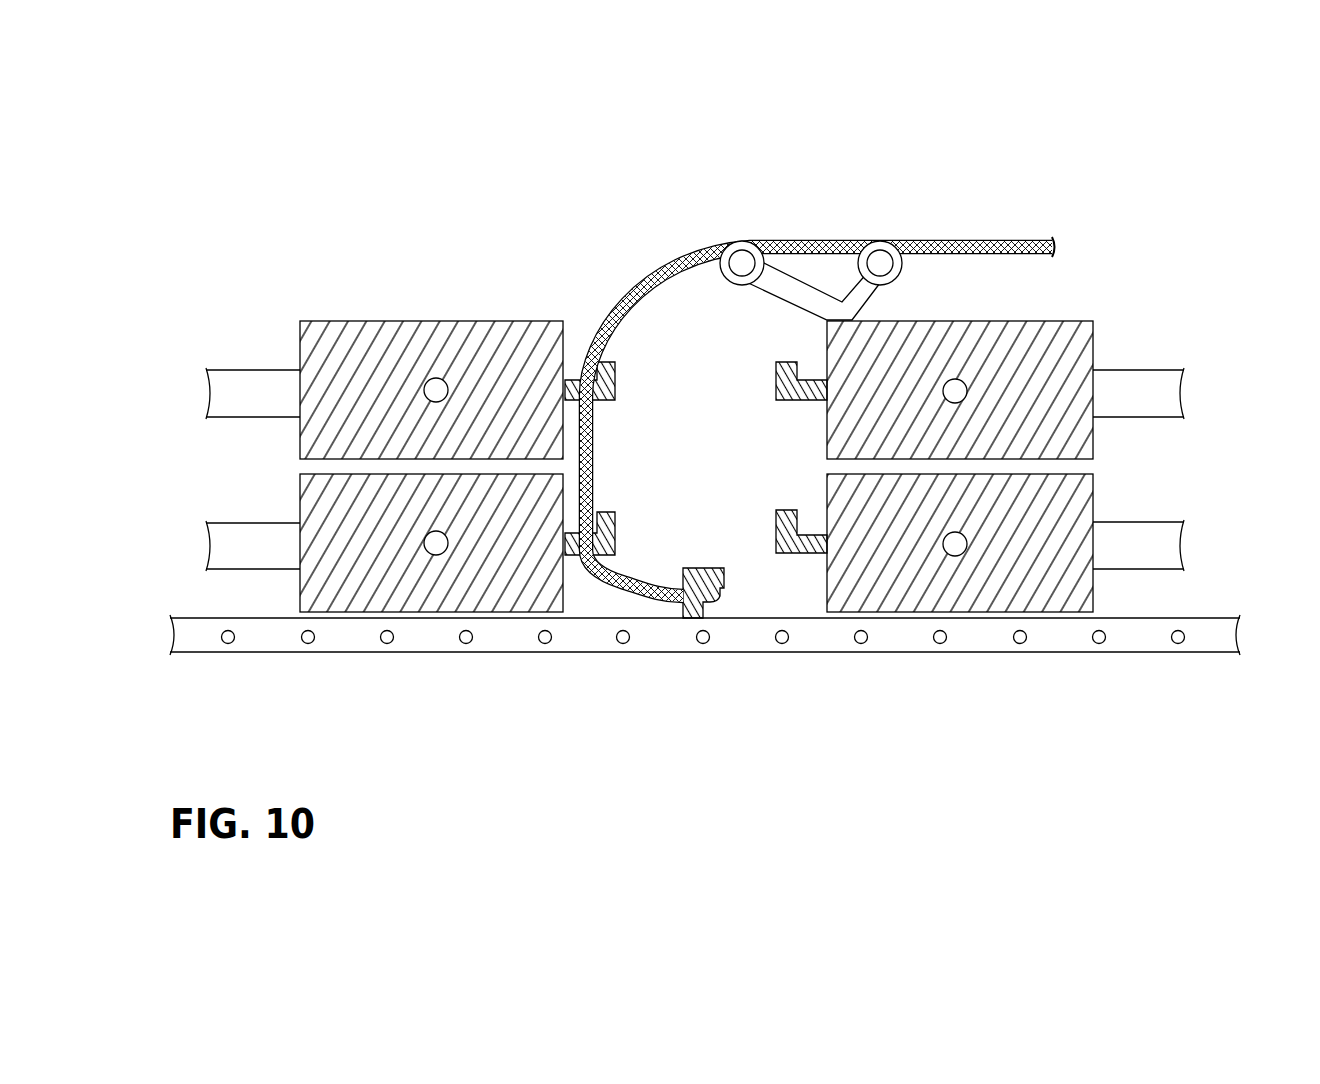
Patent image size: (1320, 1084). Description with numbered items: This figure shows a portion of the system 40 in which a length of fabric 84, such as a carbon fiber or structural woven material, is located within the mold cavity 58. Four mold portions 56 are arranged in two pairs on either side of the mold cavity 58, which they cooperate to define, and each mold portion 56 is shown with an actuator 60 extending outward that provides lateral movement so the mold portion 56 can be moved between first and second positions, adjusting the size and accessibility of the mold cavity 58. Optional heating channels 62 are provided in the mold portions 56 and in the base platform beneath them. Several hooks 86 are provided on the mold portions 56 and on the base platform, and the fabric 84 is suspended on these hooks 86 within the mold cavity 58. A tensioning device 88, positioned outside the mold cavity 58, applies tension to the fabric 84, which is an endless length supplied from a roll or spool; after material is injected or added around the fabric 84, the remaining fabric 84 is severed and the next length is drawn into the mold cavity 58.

The system 40 is at (851, 128).
The mold portions 56 is at (383, 324).
The mold cavity 58 is at (697, 455).
The actuator 60 is at (272, 380).
The heating channels 62 is at (230, 644).
The fabric 84 is at (663, 262).
The hooks 86 is at (608, 378).
The tensioning device 88 is at (855, 292).